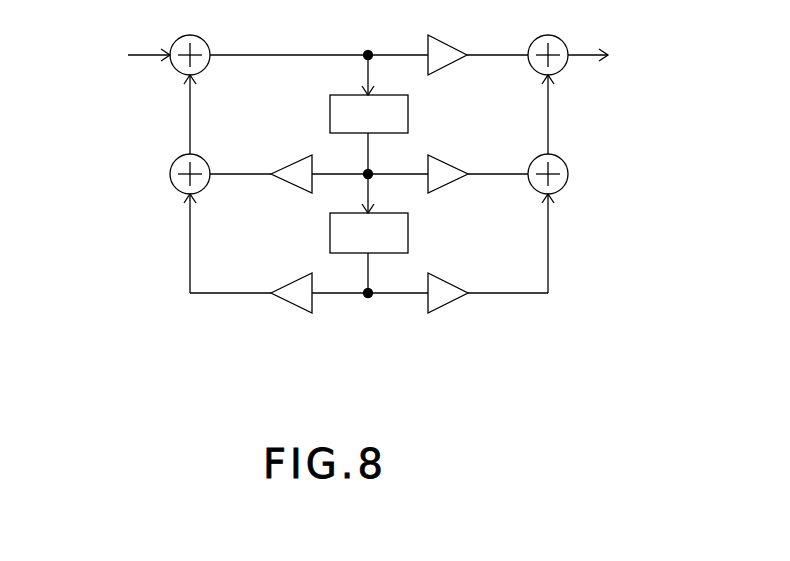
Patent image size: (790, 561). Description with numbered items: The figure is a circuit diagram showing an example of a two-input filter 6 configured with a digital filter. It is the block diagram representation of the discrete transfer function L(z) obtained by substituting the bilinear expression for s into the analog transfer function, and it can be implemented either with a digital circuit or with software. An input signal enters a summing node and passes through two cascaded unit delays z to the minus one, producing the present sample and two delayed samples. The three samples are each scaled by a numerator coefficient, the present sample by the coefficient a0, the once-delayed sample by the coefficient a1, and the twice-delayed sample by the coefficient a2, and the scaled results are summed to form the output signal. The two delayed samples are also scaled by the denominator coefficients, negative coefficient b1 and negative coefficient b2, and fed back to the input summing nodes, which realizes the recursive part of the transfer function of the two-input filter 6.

The two-input filter 6 is at (226, 322).
The coefficient a0 is at (447, 44).
The coefficient a1 is at (448, 162).
The coefficient a2 is at (448, 281).
The coefficient b1 is at (284, 159).
The coefficient b2 is at (284, 279).